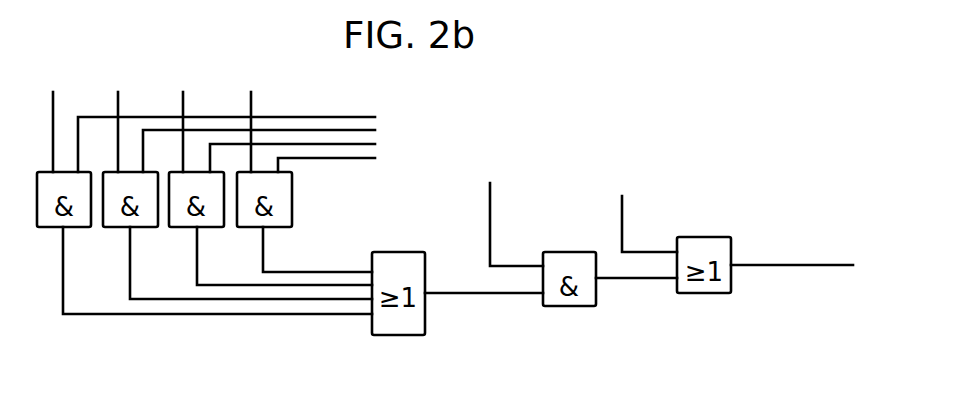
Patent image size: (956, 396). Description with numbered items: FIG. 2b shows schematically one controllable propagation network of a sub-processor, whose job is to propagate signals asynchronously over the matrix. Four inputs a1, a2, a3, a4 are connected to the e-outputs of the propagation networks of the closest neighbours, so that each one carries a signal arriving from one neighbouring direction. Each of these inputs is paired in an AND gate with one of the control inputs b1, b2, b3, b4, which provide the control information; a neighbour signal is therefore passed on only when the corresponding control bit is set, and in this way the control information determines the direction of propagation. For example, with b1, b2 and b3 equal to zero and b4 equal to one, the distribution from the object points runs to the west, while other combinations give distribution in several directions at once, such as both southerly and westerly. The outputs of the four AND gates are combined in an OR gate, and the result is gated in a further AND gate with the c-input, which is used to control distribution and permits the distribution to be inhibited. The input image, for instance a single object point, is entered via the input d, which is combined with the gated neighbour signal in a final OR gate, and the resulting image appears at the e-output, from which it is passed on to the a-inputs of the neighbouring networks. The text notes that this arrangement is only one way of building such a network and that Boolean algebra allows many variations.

The input a1 is at (65, 114).
The input a2 is at (130, 114).
The input a3 is at (195, 114).
The input a4 is at (263, 114).
The control input b1 is at (248, 123).
The control input b2 is at (280, 139).
The control input b3 is at (314, 155).
The control input b4 is at (348, 178).
The c-input c is at (516, 201).
The input d is at (649, 199).
The e-output e is at (792, 246).